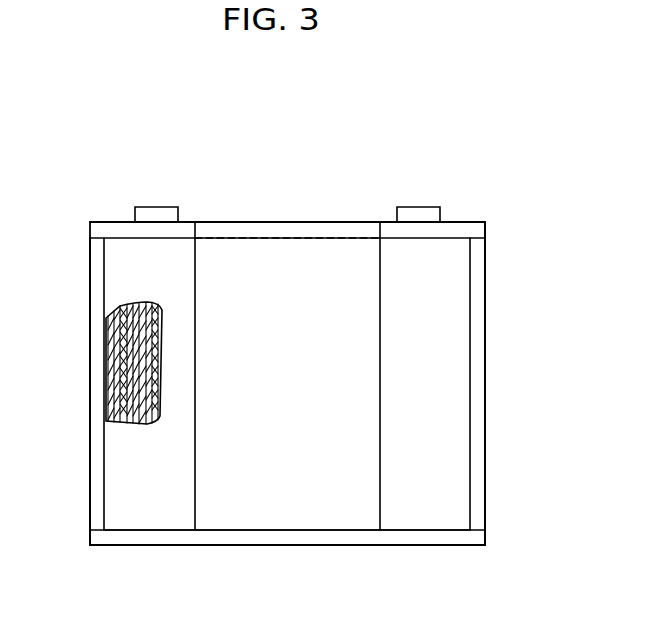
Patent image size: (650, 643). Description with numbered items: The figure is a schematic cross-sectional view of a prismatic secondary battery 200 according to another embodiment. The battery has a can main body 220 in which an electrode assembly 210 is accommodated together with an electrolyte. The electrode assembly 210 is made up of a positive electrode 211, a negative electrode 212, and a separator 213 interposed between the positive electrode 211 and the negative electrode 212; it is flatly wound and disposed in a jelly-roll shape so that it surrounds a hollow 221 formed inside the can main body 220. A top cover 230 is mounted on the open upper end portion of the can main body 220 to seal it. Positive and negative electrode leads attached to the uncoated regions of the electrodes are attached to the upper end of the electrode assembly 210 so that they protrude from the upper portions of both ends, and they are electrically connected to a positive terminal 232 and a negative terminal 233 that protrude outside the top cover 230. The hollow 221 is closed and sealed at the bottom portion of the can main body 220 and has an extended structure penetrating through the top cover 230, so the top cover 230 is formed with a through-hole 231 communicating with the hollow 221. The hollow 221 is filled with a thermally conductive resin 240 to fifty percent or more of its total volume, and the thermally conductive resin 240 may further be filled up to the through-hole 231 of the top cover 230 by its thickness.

The secondary battery 200 is at (138, 115).
The electrode assembly 210 is at (128, 452).
The positive electrode 211 is at (108, 325).
The negative electrode 212 is at (130, 350).
The separator 213 is at (120, 370).
The can main body 220 is at (476, 395).
The hollow 221 is at (305, 381).
The top cover 230 is at (476, 231).
The through-hole 231 is at (305, 210).
The positive terminal 232 is at (156, 207).
The negative terminal 233 is at (418, 207).
The thermally conductive resin 240 is at (287, 520).